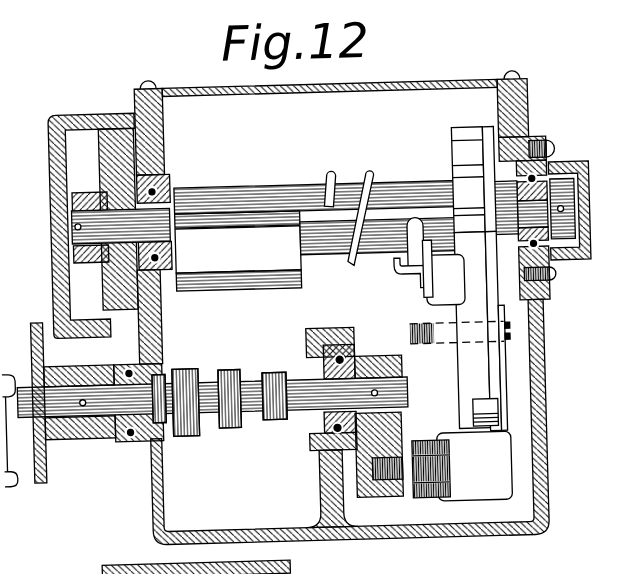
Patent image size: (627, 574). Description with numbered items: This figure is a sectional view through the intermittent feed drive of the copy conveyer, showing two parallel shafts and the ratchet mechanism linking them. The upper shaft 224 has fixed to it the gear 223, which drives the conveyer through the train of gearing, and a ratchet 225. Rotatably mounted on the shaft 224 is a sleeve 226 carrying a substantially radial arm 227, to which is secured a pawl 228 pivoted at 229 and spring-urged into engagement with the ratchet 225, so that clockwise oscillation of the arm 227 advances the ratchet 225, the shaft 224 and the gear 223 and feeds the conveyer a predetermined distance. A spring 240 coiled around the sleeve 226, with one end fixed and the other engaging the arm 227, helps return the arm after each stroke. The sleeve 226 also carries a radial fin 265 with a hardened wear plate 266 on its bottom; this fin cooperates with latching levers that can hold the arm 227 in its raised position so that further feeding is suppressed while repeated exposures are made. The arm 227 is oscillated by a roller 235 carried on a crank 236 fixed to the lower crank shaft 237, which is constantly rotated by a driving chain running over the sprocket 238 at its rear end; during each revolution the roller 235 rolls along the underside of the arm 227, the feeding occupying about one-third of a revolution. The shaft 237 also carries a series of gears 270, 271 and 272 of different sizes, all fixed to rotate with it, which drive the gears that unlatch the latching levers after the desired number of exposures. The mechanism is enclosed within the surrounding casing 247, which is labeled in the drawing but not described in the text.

The gear 223 is at (108, 290).
The shaft 224 is at (181, 207).
The ratchet 225 is at (464, 154).
The sleeve 226 is at (303, 186).
The arm 227 is at (412, 297).
The pawl 228 is at (473, 377).
The pivot 229 is at (506, 339).
The roller 235 is at (445, 504).
The crank 236 is at (360, 455).
The shaft 237 is at (297, 378).
The sprocket 238 is at (45, 451).
The spring 240 is at (351, 228).
The housing 247 is at (494, 534).
The fin 265 is at (236, 255).
The wear plate 266 is at (301, 288).
The gear 270 is at (181, 434).
The gear 271 is at (226, 428).
The gear 272 is at (276, 420).